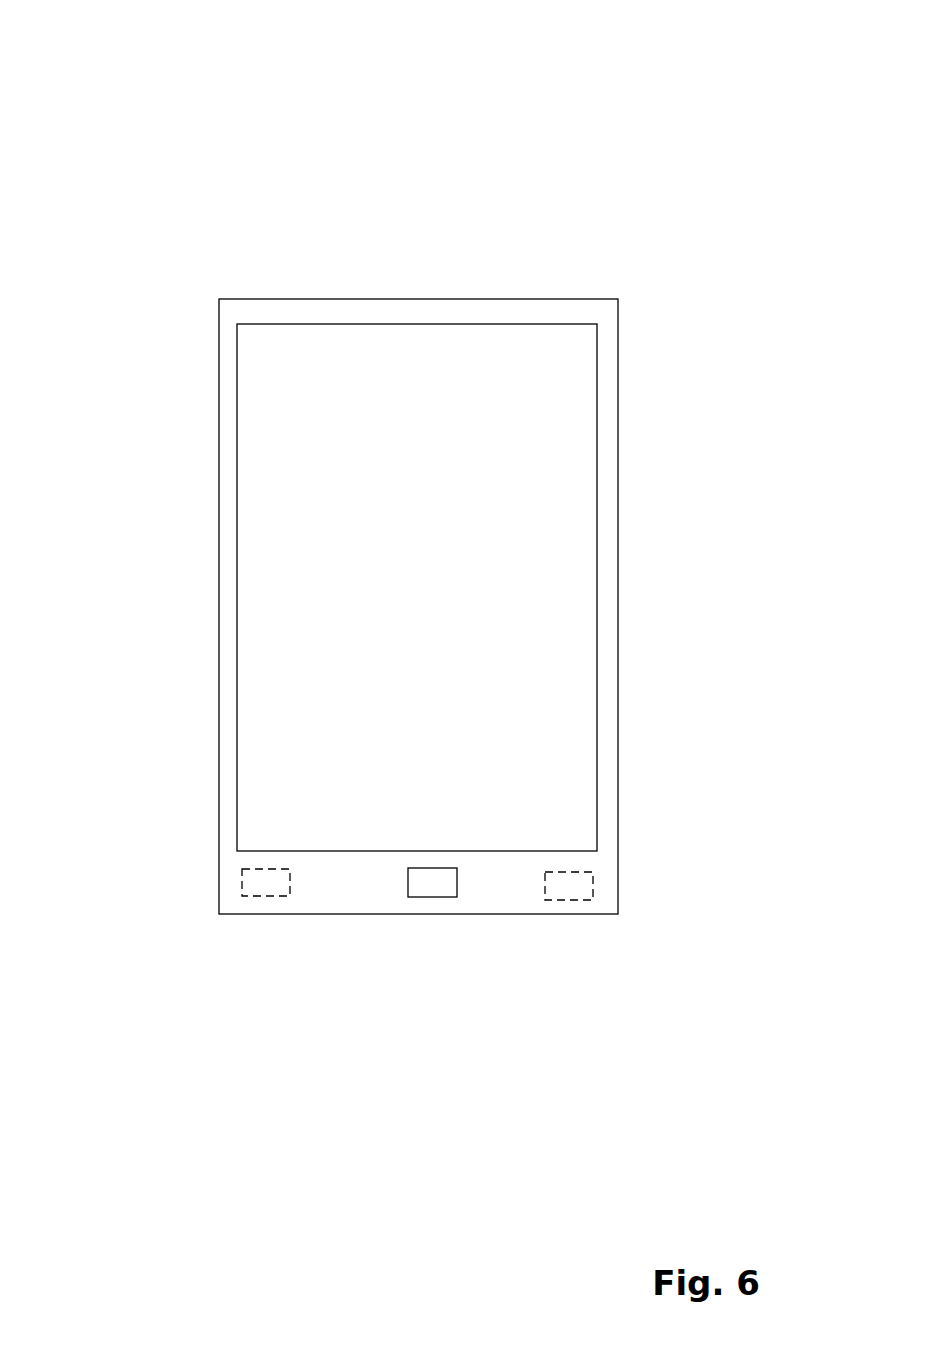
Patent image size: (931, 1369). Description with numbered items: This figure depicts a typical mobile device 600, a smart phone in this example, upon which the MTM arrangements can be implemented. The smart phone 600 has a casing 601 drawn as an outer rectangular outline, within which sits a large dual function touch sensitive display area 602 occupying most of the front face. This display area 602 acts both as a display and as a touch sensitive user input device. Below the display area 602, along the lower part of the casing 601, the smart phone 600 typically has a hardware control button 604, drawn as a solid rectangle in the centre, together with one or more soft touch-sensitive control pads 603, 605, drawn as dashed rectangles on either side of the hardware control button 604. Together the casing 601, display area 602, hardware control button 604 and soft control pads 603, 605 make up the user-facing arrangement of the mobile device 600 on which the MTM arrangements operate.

The mobile device 600 is at (452, 527).
The casing 601 is at (219, 343).
The dual function touch sensitive display area 602 is at (262, 432).
The soft touch-sensitive control pad 603 is at (265, 897).
The hardware control button 604 is at (430, 897).
The soft touch-sensitive control pad 605 is at (570, 900).